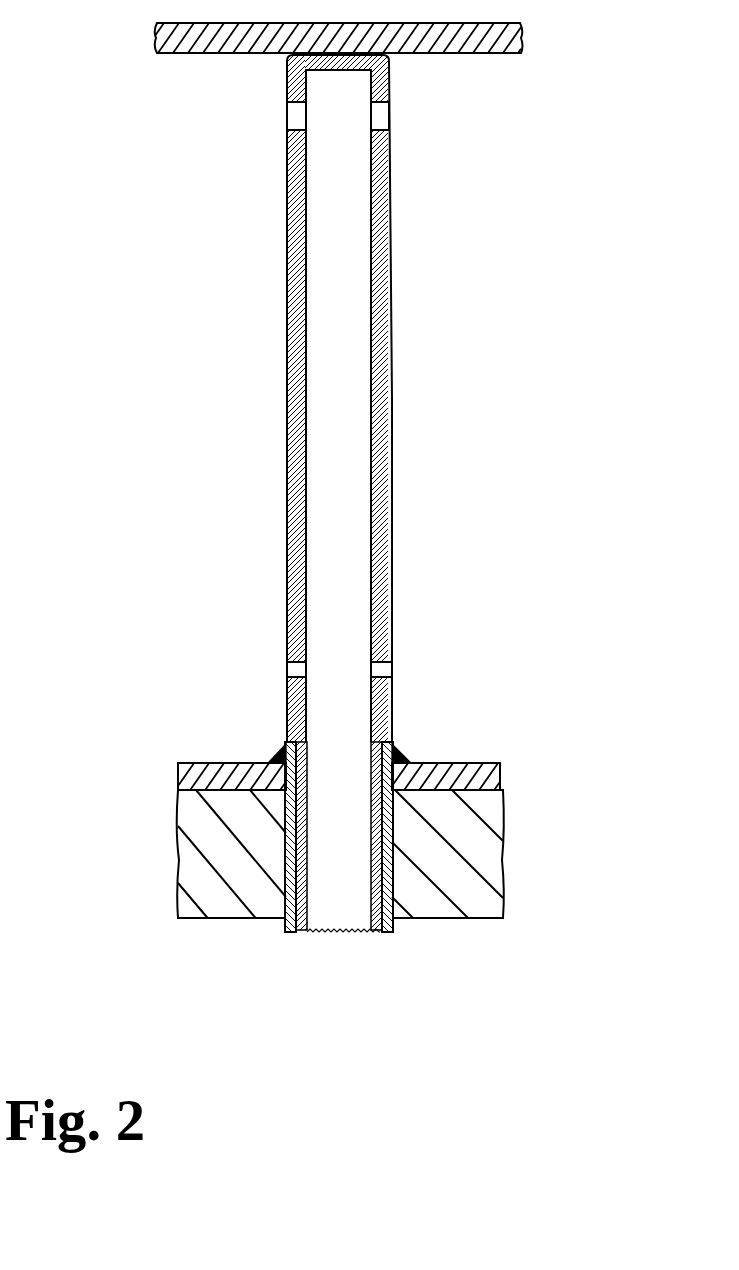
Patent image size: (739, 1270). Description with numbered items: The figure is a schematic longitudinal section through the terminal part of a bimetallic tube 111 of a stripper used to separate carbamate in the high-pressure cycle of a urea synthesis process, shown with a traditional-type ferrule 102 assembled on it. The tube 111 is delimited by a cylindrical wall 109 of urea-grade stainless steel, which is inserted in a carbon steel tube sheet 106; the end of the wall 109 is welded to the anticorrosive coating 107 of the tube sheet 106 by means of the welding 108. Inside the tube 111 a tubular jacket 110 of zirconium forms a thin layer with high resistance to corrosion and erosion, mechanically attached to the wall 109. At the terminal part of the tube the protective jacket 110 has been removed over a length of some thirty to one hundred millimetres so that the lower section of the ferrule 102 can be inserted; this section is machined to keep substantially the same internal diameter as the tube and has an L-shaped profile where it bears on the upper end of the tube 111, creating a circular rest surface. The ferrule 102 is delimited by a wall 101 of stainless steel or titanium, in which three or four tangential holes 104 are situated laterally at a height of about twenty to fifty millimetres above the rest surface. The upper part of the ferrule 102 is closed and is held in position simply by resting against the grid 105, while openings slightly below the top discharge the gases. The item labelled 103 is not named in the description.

The wall 101 is at (385, 527).
The ferrule 102 is at (337, 305).
The upper sealing ring 103 is at (300, 126).
The tangential holes 104 is at (296, 668).
The grid 105 is at (227, 37).
The tube sheet 106 is at (223, 828).
The anticorrosive coating 107 is at (218, 782).
The welding 108 is at (283, 746).
The cylindrical wall 109 is at (387, 850).
The tubular jacket 110 is at (388, 893).
The tube 111 is at (333, 913).